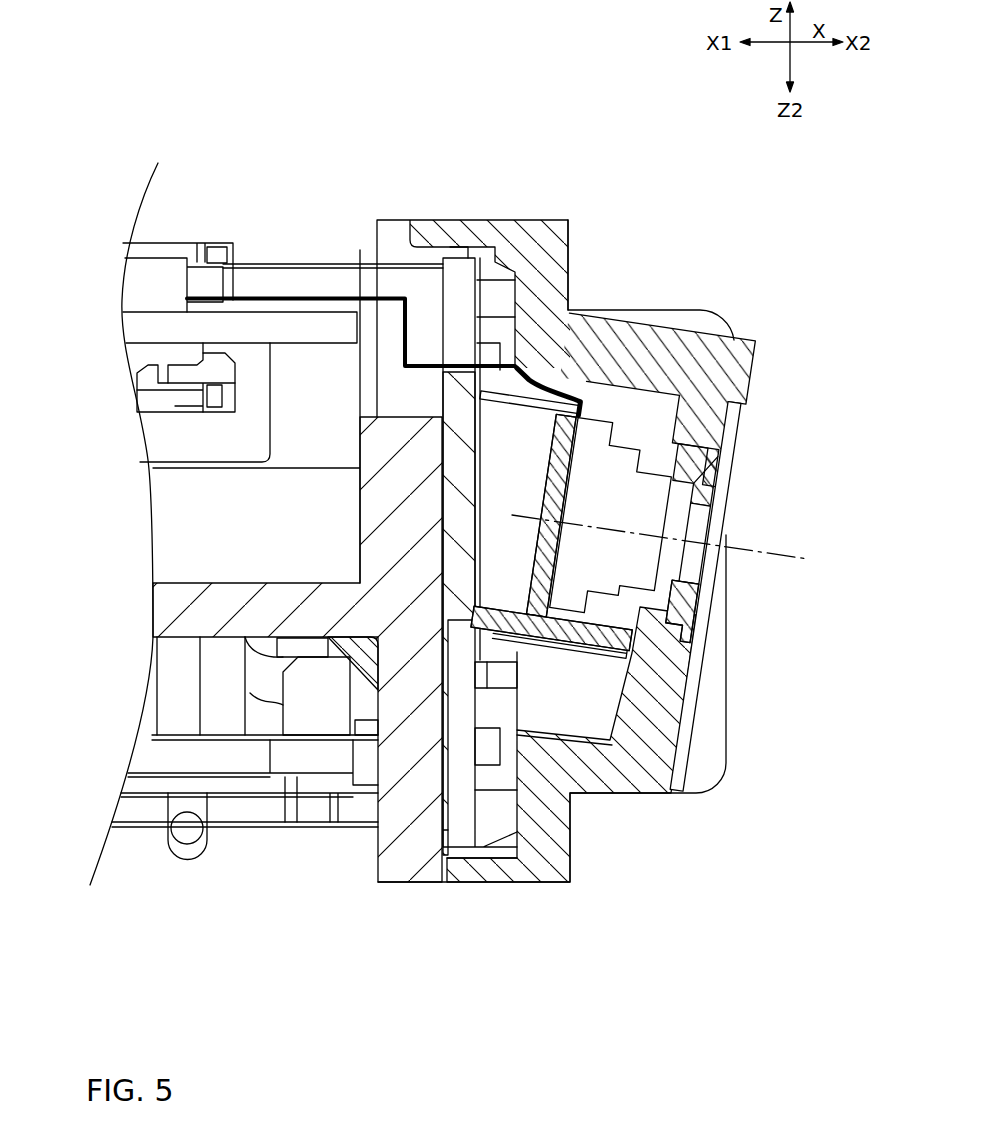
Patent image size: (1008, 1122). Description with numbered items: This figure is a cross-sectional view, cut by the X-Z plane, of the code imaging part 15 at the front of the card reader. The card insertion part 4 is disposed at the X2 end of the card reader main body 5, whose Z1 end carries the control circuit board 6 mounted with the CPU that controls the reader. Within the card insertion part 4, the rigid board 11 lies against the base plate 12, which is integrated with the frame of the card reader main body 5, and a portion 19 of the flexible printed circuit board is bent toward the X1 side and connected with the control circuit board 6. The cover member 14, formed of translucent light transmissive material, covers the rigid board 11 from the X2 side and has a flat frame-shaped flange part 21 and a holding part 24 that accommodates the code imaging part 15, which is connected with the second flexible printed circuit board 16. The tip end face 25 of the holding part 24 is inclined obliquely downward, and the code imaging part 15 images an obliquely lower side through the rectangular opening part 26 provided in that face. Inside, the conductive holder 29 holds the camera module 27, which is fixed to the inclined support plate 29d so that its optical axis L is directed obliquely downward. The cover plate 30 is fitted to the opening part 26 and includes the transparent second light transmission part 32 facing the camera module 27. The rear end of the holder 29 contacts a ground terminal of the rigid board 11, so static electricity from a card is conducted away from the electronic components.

The card insertion part 4 is at (627, 820).
The card reader main body 5 is at (280, 850).
The control circuit board 6 is at (137, 333).
The rigid board 11 is at (457, 860).
The base plate 12 is at (417, 875).
The cover member 14 is at (551, 865).
The code imaging part 15 is at (638, 517).
The second flexible printed circuit board 16 is at (293, 297).
The third portion 19 is at (343, 262).
The flange part 21 is at (548, 245).
The holding part 24 is at (742, 362).
The tip end face 25 is at (693, 686).
The opening part 26 is at (685, 630).
The camera module 27 is at (617, 478).
The holder 29 is at (566, 650).
The support plate 29d is at (557, 423).
The cover plate 30 is at (717, 462).
The second light transmission part 32 is at (703, 523).
The optical axis L is at (733, 567).